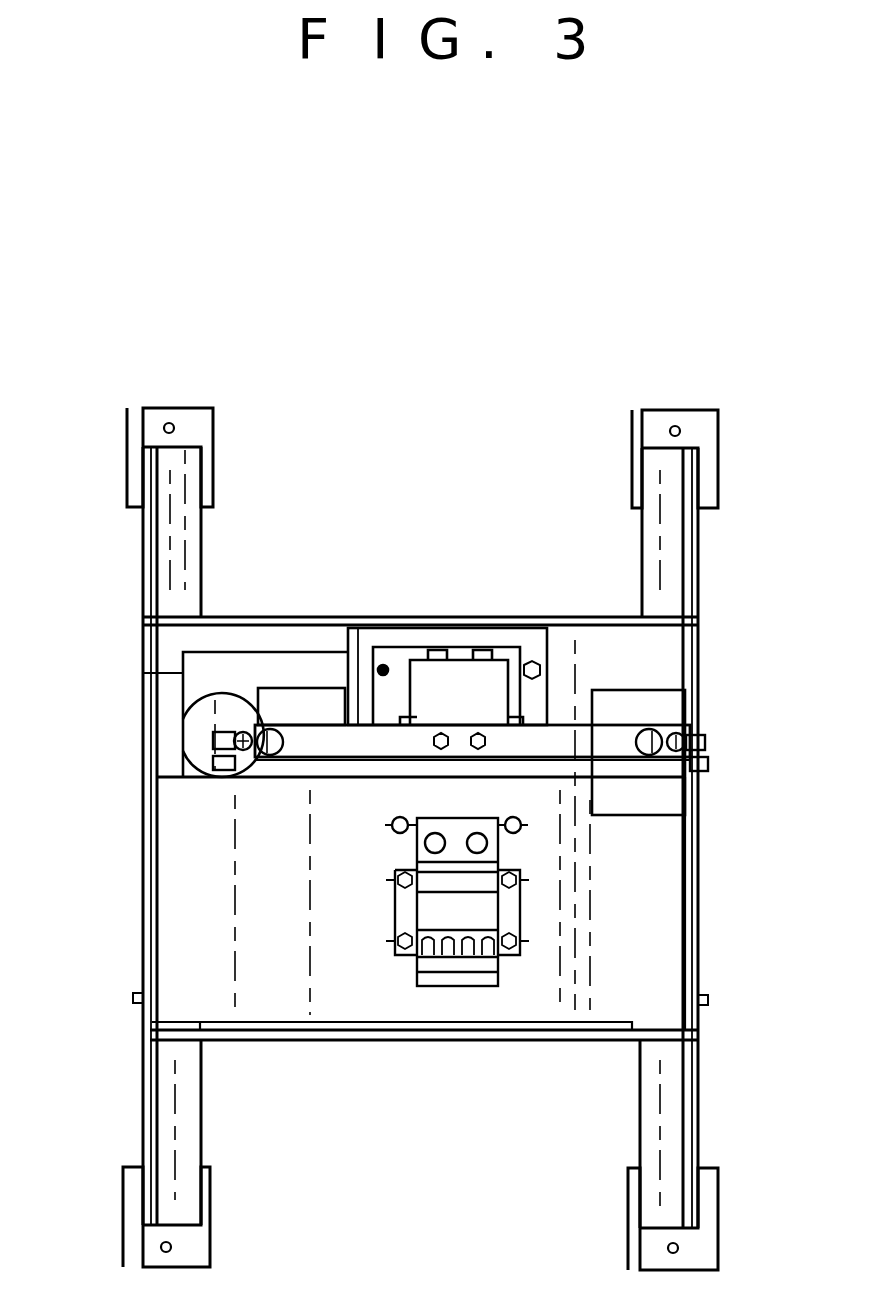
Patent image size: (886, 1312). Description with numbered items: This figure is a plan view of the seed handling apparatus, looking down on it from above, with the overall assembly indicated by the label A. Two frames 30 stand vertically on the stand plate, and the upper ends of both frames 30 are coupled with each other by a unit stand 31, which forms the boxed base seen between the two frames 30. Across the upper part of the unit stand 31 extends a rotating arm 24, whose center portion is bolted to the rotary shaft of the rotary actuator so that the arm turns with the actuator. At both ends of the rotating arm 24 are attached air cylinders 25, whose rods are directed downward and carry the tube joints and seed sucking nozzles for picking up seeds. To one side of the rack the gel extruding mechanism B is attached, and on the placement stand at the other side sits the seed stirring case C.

The rotating arm 24 is at (330, 735).
The air cylinders 25 is at (268, 722).
The frames 30 is at (143, 556).
The unit stand 31 is at (198, 858).
The lamp unit assembly A is at (584, 268).
The gel extruding mechanism B is at (287, 680).
The seed stirring case C is at (660, 815).